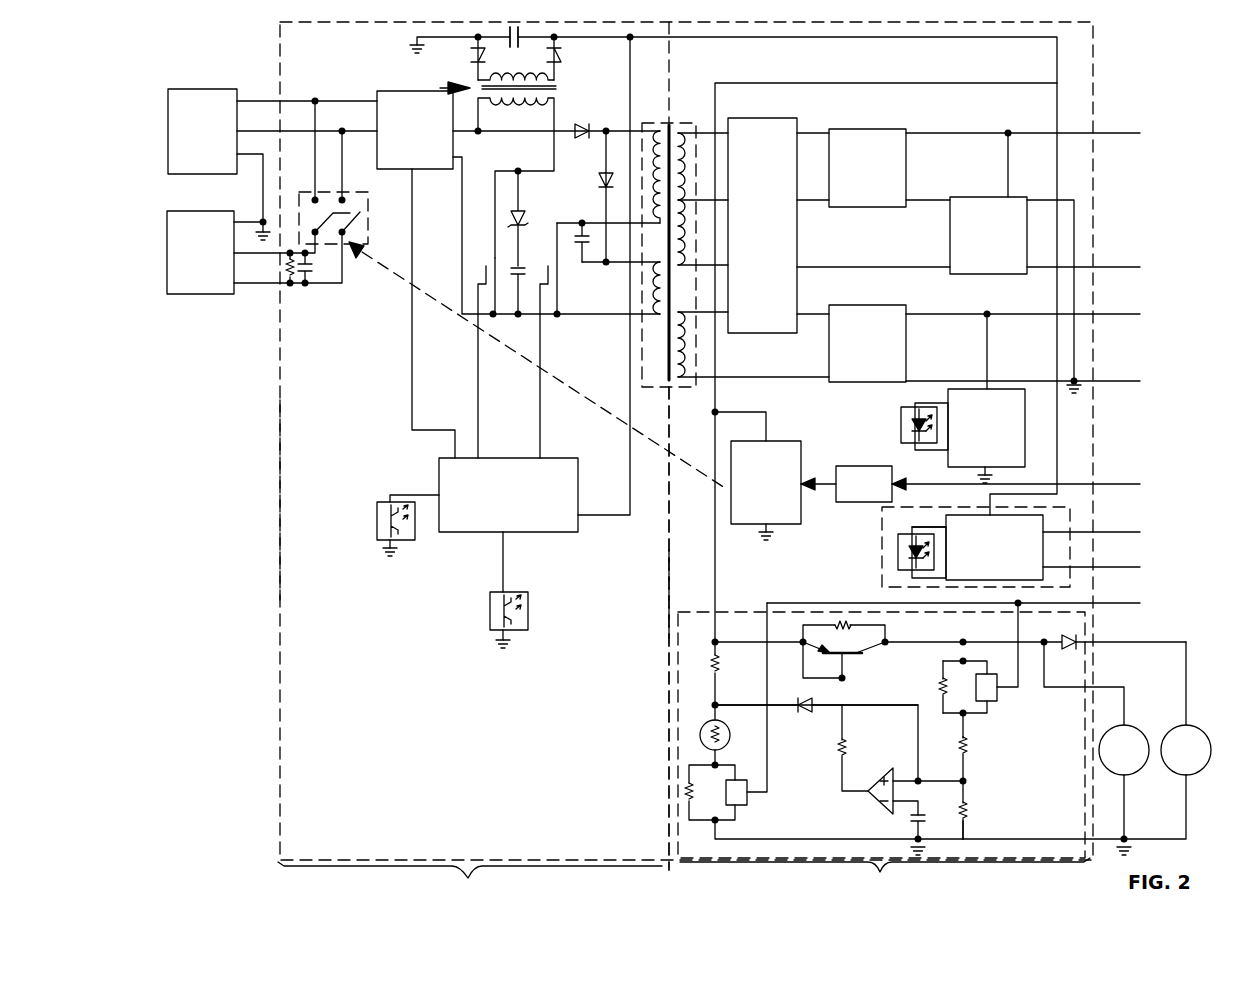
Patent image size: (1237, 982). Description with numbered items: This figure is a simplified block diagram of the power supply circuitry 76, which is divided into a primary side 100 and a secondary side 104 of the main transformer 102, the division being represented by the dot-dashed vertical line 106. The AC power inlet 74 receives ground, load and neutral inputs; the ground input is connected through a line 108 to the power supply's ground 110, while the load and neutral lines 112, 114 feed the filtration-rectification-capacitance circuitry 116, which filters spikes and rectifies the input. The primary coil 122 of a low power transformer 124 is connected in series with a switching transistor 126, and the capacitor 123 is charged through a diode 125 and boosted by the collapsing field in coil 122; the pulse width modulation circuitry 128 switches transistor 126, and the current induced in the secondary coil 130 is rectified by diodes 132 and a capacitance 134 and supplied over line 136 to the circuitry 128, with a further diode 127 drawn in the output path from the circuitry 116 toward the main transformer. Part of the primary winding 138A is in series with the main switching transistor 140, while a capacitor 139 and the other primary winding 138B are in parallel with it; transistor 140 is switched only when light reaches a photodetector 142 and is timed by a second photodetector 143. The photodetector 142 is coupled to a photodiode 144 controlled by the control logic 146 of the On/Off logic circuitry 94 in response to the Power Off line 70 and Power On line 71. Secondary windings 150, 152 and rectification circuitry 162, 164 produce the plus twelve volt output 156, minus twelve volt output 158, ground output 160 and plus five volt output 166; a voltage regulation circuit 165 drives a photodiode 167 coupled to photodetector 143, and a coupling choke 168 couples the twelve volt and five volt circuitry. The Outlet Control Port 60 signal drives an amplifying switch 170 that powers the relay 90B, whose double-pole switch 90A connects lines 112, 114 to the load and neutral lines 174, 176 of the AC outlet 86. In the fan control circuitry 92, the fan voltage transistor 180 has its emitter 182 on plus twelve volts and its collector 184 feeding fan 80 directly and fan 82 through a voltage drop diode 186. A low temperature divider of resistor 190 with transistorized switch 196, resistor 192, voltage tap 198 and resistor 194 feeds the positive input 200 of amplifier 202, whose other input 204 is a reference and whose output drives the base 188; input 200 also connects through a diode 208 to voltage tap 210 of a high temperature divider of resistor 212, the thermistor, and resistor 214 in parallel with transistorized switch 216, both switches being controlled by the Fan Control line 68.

The Outlet Control Port 60 is at (1106, 484).
The Fan Control Line 68 is at (1106, 603).
The Power Off Line 70 is at (1106, 567).
The Power On line 71 is at (1106, 532).
The AC power inlet socket 74 is at (196, 89).
The power supply circuitry 76 is at (280, 520).
The fan 80 is at (1130, 727).
The fan 82 is at (700, 735).
The AC power outlet 86 is at (200, 294).
The double-pole switch 90A is at (366, 236).
The relay 90B is at (780, 441).
The fan control circuitry 92 is at (669, 590).
The On/Off logic circuitry 94 is at (882, 580).
The primary side 100 is at (470, 876).
The main transformer 102 is at (642, 365).
The secondary side 104 is at (885, 877).
The dot-dashed vertical line 106 is at (668, 865).
The line 108 is at (263, 212).
The ground 110 is at (268, 233).
The load line 112 is at (315, 100).
The neutral line 114 is at (282, 131).
The filtration-rectification-capacitance circuitry 116 is at (420, 91).
The primary coil 122 is at (550, 99).
The capacitor 123 is at (519, 265).
The low power transformer 124 is at (456, 86).
The diode 125 is at (524, 215).
The switching transistor 126 is at (488, 262).
The diode 127 is at (585, 126).
The pulse width modulation circuitry 128 is at (580, 532).
The secondary coil 130 is at (550, 80).
The diodes 132 is at (472, 56).
The capacitance 134 is at (510, 37).
The line 136 is at (630, 40).
The primary winding 138A is at (650, 150).
The primary winding 138B is at (652, 292).
The capacitor 139 is at (584, 262).
The main switching transistor 140 is at (552, 300).
The photodetector 142 is at (527, 630).
The photodetector 143 is at (410, 540).
The photodiode 144 is at (897, 552).
The control logic 146 is at (882, 528).
The secondary winding 150 is at (704, 145).
The secondary winding 152 is at (700, 372).
The plus twelve volt output 156 is at (1110, 133).
The minus twelve volt output 158 is at (1110, 267).
The ground output 160 is at (1110, 381).
The rectification circuitry 162 is at (866, 129).
The rectification circuitry 164 is at (866, 305).
The voltage regulation circuit 165 is at (968, 389).
The plus five volt output 166 is at (1110, 314).
The photodiode 167 is at (901, 426).
The coupling choke 168 is at (772, 118).
The amplifying switch 170 is at (862, 466).
The load line 174 is at (288, 286).
The neutral line 176 is at (262, 284).
The fan voltage transistor 180 is at (862, 658).
The emitter 182 is at (828, 645).
The collector 184 is at (860, 646).
The voltage drop diode 186 is at (1068, 651).
The base 188 is at (838, 660).
The resistor 190 is at (941, 688).
The resistor 192 is at (966, 750).
The resistor 194 is at (966, 815).
The transistorized switch 196 is at (998, 700).
The voltage tap 198 is at (966, 790).
The positive input 200 is at (898, 785).
The amplifier 202 is at (886, 801).
The input 204 is at (922, 808).
The diode 208 is at (803, 712).
The voltage tap 210 is at (712, 705).
The resistor 212 is at (712, 668).
The resistor 214 is at (688, 792).
The transistorized switch 216 is at (749, 800).